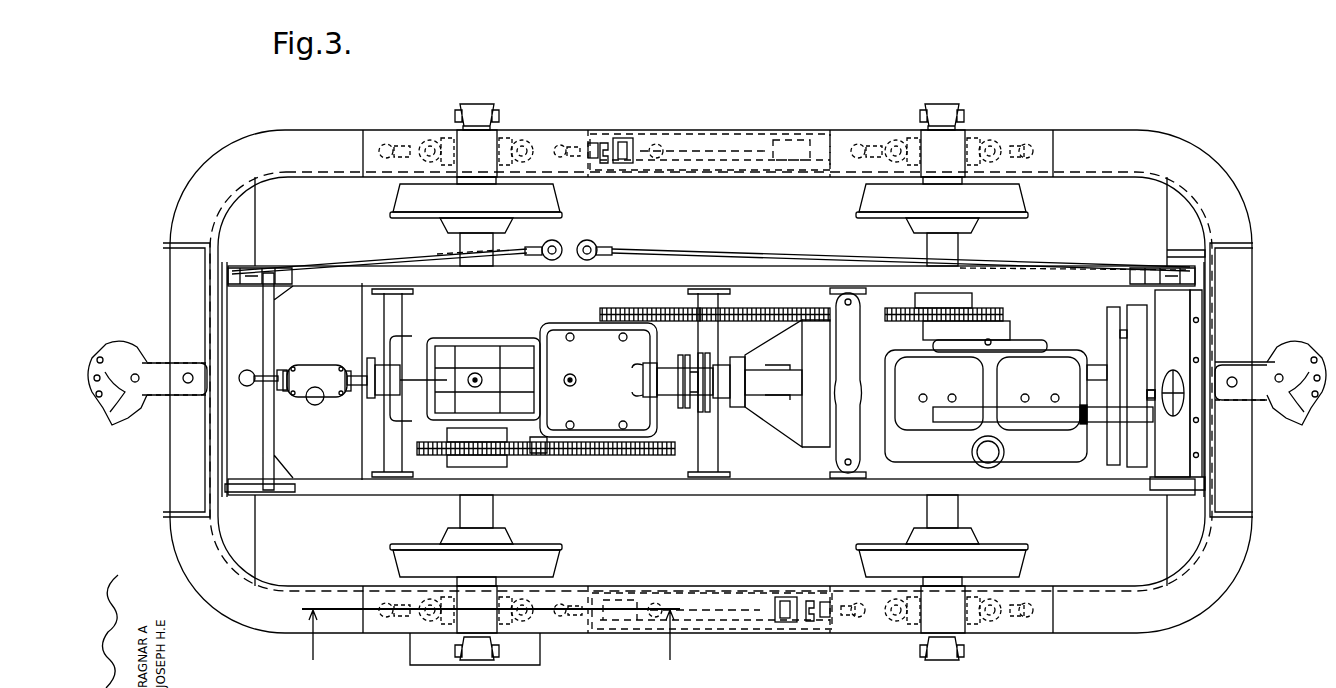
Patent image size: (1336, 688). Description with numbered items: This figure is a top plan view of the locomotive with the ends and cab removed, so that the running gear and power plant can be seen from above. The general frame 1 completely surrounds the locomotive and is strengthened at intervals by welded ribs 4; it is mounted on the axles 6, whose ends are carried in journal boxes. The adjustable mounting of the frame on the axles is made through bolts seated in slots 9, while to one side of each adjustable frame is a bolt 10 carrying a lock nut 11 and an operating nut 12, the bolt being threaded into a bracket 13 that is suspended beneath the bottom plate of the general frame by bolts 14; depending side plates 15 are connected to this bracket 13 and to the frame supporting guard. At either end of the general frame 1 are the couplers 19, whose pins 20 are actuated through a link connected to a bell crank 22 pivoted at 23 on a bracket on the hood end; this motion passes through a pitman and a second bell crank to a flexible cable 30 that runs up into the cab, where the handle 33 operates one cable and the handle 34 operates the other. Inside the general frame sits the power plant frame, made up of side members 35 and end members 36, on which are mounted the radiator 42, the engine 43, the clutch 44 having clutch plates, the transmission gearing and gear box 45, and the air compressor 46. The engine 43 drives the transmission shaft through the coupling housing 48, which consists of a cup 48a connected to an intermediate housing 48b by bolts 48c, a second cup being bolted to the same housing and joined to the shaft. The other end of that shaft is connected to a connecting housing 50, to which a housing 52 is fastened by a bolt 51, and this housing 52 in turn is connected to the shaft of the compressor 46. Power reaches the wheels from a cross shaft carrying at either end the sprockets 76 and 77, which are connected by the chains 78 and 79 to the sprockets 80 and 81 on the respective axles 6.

The general frame 1 is at (323, 662).
The ribs 4 is at (440, 380).
The axles 6 is at (463, 307).
The slots 9 is at (572, 135).
The bolt 10 is at (602, 140).
The lock nut 11 is at (590, 140).
The operating nut 12 is at (615, 140).
The bracket 13 is at (710, 140).
The bolts 14 is at (660, 140).
The depending side plates 15 is at (485, 645).
The couplers 19 is at (118, 348).
The pins 20 is at (143, 367).
The bell crank 22 is at (237, 267).
The pivot 23 is at (207, 295).
The flexible cable 30 is at (423, 262).
The handle 33 is at (553, 240).
The handle 34 is at (588, 240).
The side members 35 is at (353, 273).
The end members 36 is at (252, 350).
The radiator 42 is at (1182, 317).
The engine 43 is at (1060, 338).
The clutch 44 is at (858, 320).
The transmission gearing and gear box 45 is at (588, 360).
The air compressor 46 is at (315, 376).
The coupling housing 48 is at (693, 397).
The cup 48a is at (713, 363).
The intermediate housing 48b is at (682, 357).
The bolts 48c is at (705, 417).
The connecting housing 50 is at (383, 387).
The bolt 51 is at (370, 360).
The housing 52 is at (355, 387).
The sprocket 76 is at (651, 304).
The sprocket 77 is at (640, 452).
The chain 78 is at (600, 457).
The chain 79 is at (760, 308).
The sprocket 80 is at (479, 452).
The sprocket 81 is at (947, 320).